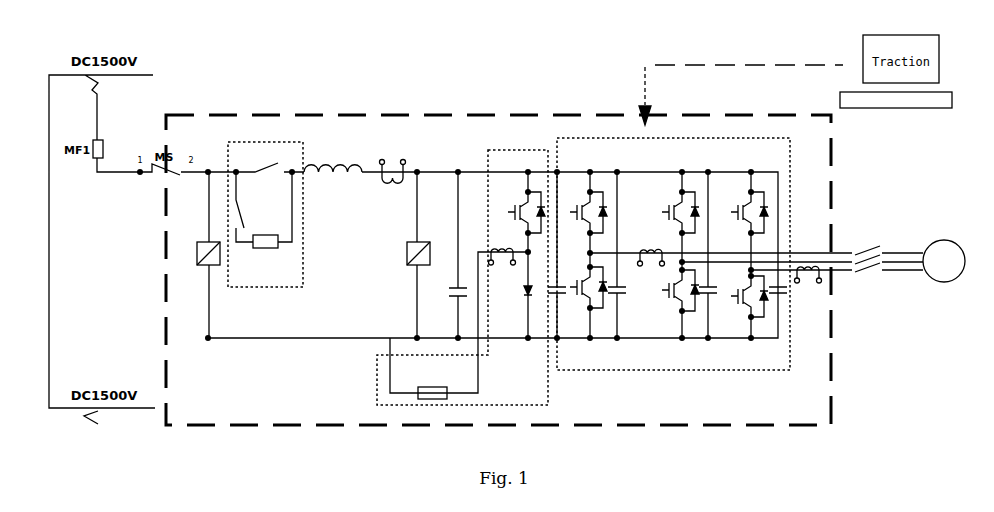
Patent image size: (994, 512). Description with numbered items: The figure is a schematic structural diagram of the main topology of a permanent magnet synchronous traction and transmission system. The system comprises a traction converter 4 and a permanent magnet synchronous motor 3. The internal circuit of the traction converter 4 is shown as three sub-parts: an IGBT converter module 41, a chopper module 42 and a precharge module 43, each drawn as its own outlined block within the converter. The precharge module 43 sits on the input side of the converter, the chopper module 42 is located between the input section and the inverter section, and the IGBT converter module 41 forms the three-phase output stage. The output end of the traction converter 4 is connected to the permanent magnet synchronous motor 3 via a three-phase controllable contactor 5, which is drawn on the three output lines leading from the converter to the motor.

The permanent magnet synchronous motor 3 is at (937, 238).
The traction converter 4 is at (398, 114).
The three-phase controllable contactor 5 is at (878, 273).
The IGBT converter module 41 is at (726, 373).
The chopper module 42 is at (548, 380).
The precharge module 43 is at (303, 272).